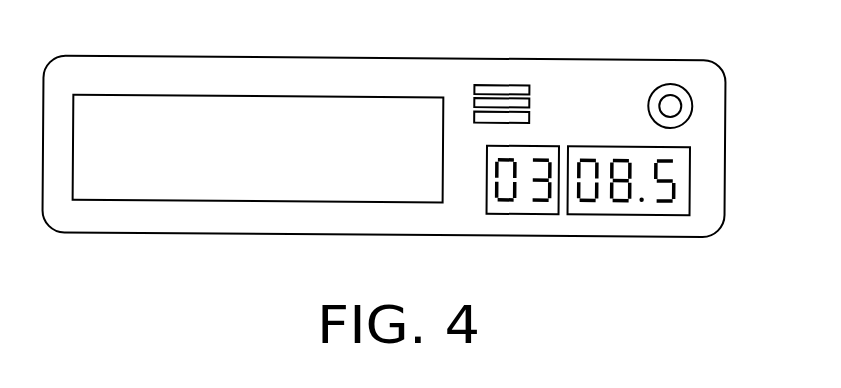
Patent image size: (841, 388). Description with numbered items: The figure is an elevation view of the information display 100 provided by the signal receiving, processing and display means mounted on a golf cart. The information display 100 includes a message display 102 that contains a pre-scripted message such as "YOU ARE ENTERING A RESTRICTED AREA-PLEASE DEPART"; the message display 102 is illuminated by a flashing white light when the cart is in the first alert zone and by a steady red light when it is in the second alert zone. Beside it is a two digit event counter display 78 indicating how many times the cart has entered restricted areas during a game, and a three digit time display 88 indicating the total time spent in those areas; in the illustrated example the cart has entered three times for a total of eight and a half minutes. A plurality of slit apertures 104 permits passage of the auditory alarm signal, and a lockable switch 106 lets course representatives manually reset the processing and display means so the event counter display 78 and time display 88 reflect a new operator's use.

The information display 100 is at (445, 43).
The message display 102 is at (410, 185).
The slit apertures 104 is at (534, 83).
The lockable switch 106 is at (680, 94).
The event counter display 78 is at (523, 202).
The time display 88 is at (643, 200).